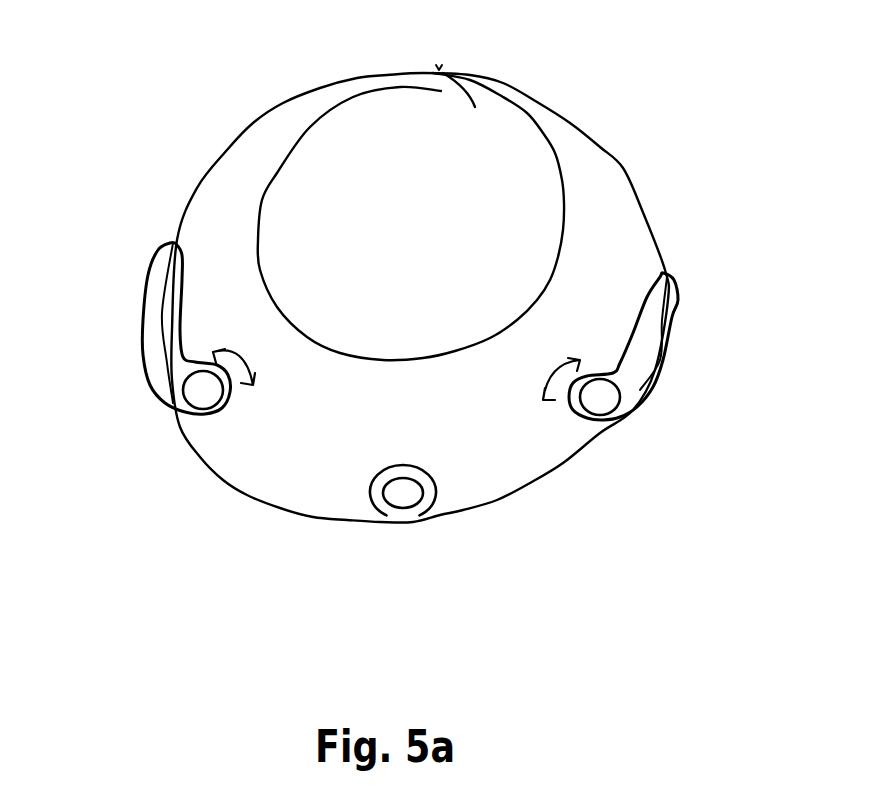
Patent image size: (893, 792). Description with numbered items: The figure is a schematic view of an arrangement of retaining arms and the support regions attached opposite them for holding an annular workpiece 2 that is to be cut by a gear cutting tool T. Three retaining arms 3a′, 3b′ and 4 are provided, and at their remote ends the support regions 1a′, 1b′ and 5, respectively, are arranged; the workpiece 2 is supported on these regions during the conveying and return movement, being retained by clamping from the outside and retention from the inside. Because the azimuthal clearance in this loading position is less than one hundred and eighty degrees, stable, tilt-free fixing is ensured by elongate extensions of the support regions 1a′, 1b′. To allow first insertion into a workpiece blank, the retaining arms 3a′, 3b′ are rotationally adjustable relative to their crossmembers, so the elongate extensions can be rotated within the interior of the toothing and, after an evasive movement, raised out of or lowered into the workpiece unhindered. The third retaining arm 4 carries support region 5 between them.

The annular workpiece 2 is at (227, 148).
The gear cutting tool T is at (568, 186).
The support region 1b′ is at (145, 320).
The retaining arm 3b′ is at (205, 393).
The support region 1a′ is at (637, 353).
The retaining arm 3a′ is at (602, 402).
The retaining arm 4 is at (407, 493).
The support region 5 is at (430, 497).